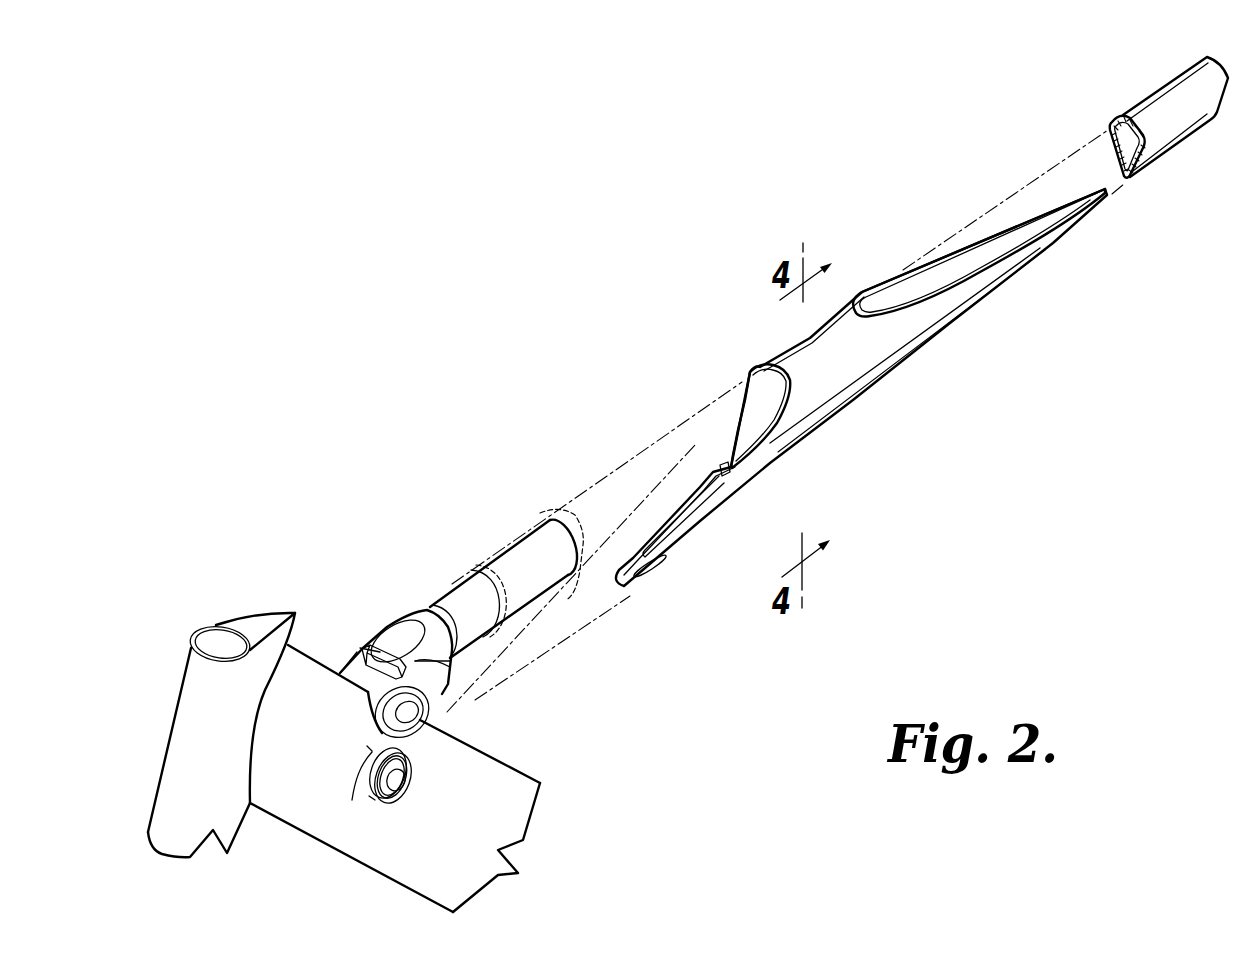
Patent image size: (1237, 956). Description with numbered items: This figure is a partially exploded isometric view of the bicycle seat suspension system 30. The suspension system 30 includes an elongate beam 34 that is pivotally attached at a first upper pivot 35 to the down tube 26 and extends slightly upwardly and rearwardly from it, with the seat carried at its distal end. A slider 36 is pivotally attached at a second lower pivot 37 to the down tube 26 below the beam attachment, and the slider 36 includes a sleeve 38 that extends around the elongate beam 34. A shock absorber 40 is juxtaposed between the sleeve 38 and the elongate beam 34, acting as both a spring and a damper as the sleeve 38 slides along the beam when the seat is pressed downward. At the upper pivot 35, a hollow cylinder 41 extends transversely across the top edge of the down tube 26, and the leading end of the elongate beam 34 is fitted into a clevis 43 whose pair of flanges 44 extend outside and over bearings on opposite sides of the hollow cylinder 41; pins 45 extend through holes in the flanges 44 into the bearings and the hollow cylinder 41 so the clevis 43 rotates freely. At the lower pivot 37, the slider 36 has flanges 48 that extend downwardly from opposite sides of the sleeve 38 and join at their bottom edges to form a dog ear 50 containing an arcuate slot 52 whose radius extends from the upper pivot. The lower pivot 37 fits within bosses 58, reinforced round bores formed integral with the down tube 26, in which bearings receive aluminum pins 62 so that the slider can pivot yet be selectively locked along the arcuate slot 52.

The down tube 26 is at (283, 808).
The suspension system 30 is at (548, 320).
The elongate beam 34 is at (617, 480).
The upper pivot 35 is at (325, 644).
The slider 36 is at (723, 535).
The lower pivot 37 is at (384, 818).
The sleeve 38 is at (883, 350).
The shock absorber 40 is at (757, 391).
The hollow cylinder 41 is at (365, 667).
The clevis 43 is at (423, 594).
The flanges 44 is at (387, 630).
The pins 45 is at (420, 707).
The flanges 48 is at (700, 490).
The dog ear 50 is at (687, 537).
The arcuate slot 52 is at (657, 565).
The bosses 58 is at (367, 795).
The aluminum pins 62 is at (410, 770).